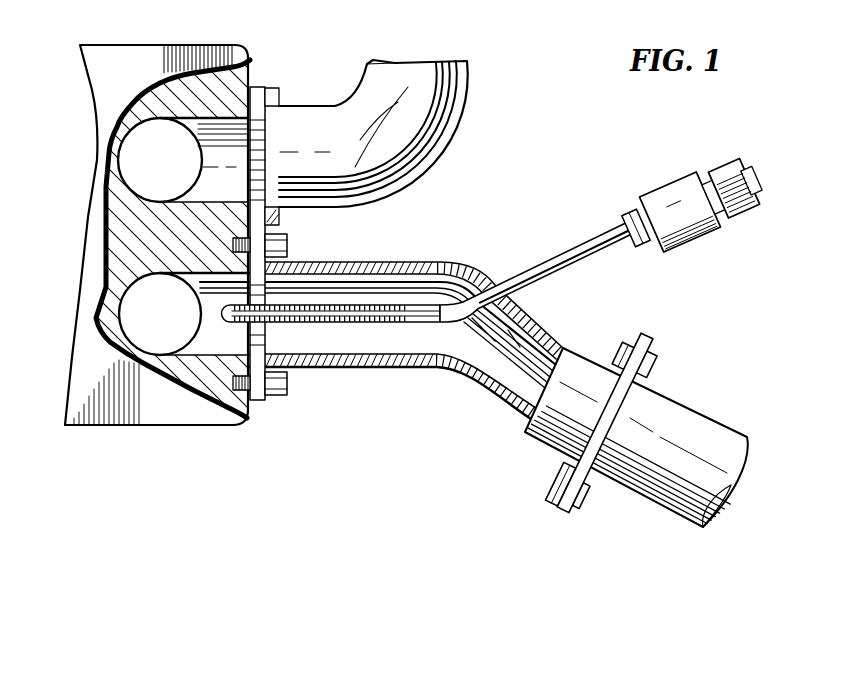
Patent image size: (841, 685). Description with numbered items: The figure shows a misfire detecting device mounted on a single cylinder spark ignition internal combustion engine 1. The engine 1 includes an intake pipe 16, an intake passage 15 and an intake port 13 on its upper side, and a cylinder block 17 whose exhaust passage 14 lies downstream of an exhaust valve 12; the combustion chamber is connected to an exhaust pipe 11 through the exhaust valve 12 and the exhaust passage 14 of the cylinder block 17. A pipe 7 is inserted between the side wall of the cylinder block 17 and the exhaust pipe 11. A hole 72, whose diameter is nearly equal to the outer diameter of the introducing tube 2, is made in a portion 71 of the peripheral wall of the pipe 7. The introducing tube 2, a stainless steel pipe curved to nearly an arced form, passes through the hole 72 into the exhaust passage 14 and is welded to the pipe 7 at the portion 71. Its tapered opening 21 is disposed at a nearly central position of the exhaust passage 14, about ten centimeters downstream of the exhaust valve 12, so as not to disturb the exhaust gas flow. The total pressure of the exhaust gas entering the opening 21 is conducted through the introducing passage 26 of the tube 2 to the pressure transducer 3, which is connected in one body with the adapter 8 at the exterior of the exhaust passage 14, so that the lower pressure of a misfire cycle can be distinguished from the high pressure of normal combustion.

The internal combustion engine 1 is at (167, 50).
The introducing tube 2 is at (600, 236).
The pressure transducer 3 is at (720, 175).
The pipe 7 is at (445, 372).
The adapter 8 is at (658, 205).
The exhaust pipe 11 is at (710, 420).
The exhaust valve 12 is at (139, 281).
The intake port 13 is at (167, 133).
The exhaust passage 14 is at (204, 313).
The intake passage 15 is at (227, 150).
The intake pipe 16 is at (318, 120).
The cylinder block 17 is at (192, 257).
The opening 21 is at (227, 323).
The introducing passage 26 is at (392, 322).
The portion of the peripheral wall 71 is at (500, 283).
The hole 72 is at (533, 294).